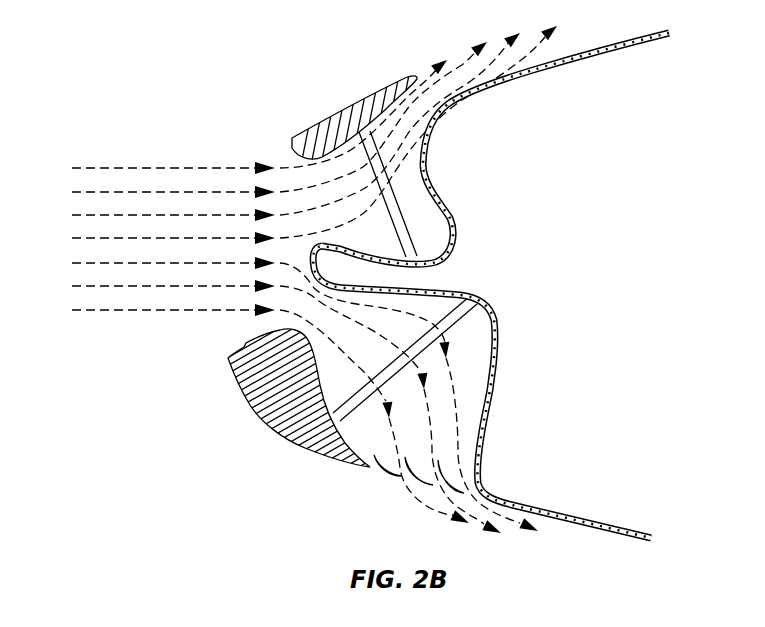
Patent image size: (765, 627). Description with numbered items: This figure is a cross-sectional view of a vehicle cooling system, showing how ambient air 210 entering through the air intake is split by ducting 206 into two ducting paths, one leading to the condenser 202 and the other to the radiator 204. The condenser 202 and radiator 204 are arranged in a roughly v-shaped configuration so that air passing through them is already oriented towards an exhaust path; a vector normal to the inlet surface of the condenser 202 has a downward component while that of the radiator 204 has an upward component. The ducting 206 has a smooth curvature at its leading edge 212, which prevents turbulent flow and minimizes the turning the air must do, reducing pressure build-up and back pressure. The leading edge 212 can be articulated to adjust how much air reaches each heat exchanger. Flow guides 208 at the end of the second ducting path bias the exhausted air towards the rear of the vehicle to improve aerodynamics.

The condenser 202 is at (452, 232).
The radiator 204 is at (490, 318).
The ducting 206 is at (425, 153).
The flow guides 208 is at (487, 468).
The ambient air 210 is at (173, 224).
The leading edge 212 is at (317, 268).